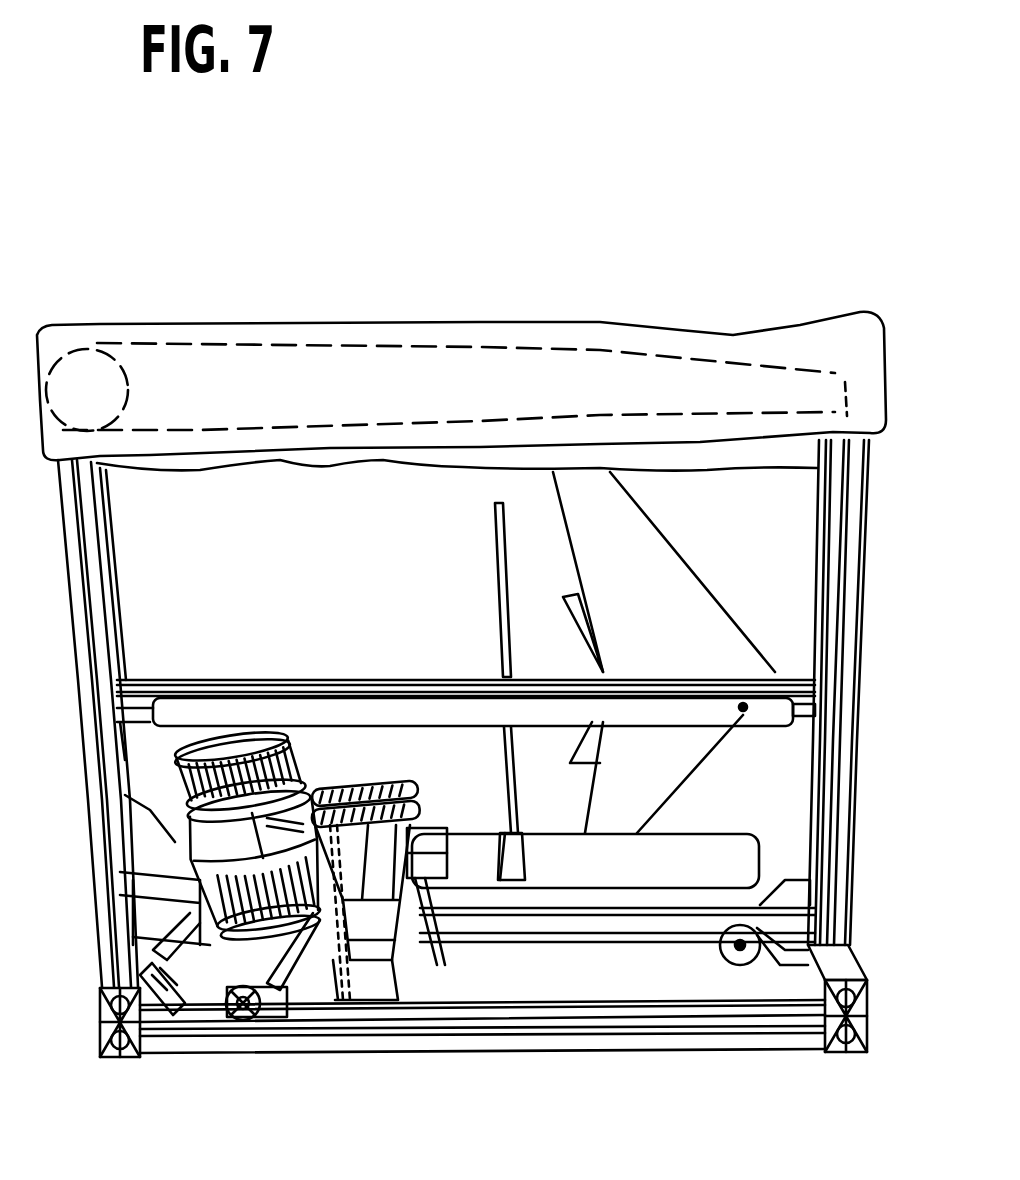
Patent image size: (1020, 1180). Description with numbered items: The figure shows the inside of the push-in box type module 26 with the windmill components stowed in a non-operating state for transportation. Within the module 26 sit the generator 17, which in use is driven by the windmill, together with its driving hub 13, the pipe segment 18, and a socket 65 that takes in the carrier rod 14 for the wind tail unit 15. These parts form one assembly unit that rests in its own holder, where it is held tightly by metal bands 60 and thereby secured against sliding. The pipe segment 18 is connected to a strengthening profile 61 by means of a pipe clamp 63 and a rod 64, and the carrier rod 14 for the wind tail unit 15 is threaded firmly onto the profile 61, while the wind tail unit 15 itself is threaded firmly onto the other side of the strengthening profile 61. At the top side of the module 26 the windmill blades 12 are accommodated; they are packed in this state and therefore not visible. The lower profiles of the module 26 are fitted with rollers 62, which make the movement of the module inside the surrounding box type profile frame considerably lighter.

The windmill blades 12 is at (468, 343).
The box type module 26 is at (689, 299).
The rod 64 is at (500, 610).
The wind tail unit 15 is at (700, 603).
The strengthening profile 61 is at (314, 690).
The carrier rod 14 is at (432, 708).
The driving hub 13 is at (192, 745).
The generator 17 is at (240, 863).
The pipe clamp 63 is at (505, 833).
The pipe segment 18 is at (650, 862).
The metal bands 60 is at (130, 907).
The rollers 62 is at (757, 993).
The socket 65 is at (377, 980).